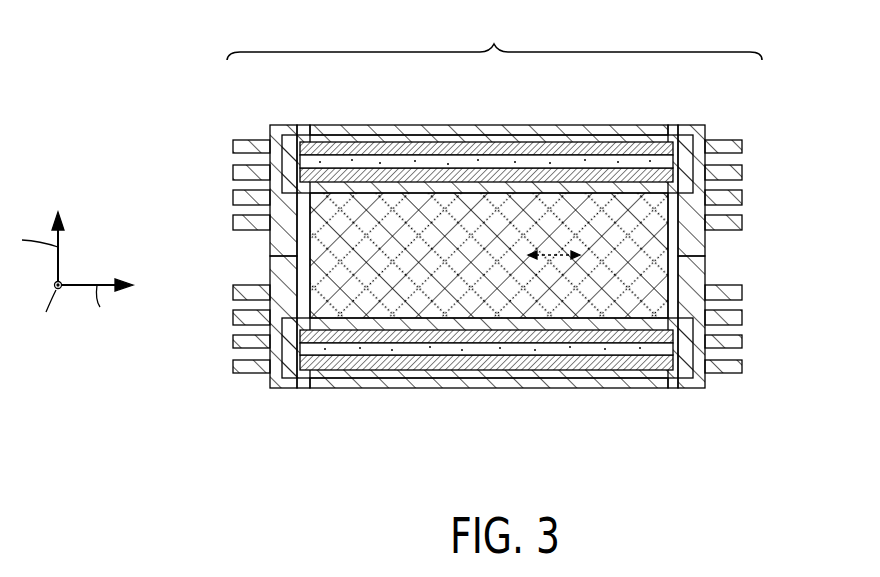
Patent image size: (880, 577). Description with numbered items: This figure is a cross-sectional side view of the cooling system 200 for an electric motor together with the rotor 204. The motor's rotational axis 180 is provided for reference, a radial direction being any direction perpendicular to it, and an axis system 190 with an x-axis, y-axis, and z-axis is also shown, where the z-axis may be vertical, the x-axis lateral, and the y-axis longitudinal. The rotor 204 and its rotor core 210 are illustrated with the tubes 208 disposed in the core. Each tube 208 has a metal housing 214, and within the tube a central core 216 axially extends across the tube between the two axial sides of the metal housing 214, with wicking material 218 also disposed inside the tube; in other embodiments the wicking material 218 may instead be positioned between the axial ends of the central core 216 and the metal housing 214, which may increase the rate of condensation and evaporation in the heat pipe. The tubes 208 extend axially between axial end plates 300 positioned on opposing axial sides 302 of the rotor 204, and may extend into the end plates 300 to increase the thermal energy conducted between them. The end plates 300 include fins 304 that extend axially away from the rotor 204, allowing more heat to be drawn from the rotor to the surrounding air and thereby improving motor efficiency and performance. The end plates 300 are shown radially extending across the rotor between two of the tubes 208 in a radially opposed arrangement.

The rotational axis 180 is at (556, 253).
The axis system 190 is at (101, 241).
The cooling system 200 is at (731, 122).
The rotor 204 is at (494, 40).
The tubes 208 is at (350, 122).
The rotor core 210 is at (497, 252).
The metal housing 214 is at (614, 140).
The central core 216 is at (502, 160).
The wicking material 218 is at (563, 150).
The axial end plates 300 is at (206, 246).
The axial sides 302 is at (200, 323).
The fins 304 is at (236, 149).